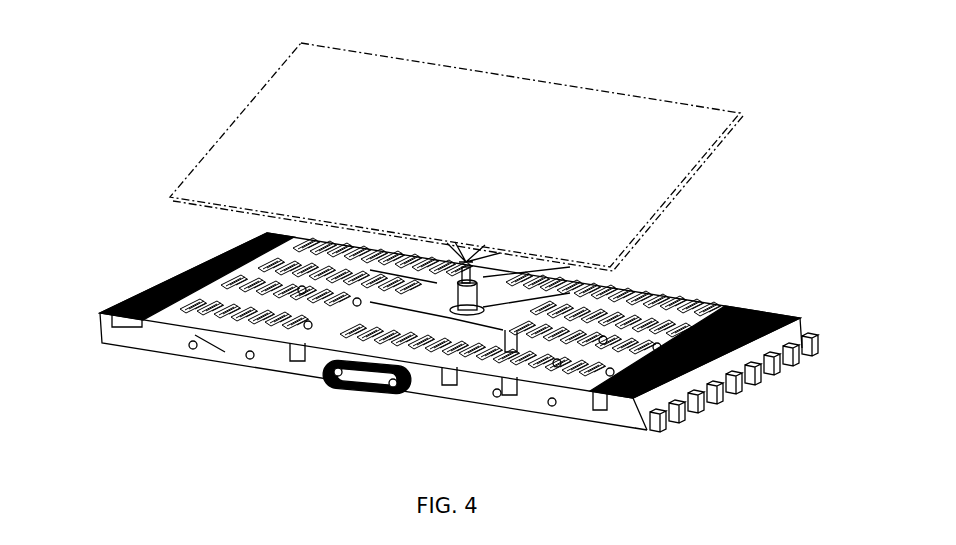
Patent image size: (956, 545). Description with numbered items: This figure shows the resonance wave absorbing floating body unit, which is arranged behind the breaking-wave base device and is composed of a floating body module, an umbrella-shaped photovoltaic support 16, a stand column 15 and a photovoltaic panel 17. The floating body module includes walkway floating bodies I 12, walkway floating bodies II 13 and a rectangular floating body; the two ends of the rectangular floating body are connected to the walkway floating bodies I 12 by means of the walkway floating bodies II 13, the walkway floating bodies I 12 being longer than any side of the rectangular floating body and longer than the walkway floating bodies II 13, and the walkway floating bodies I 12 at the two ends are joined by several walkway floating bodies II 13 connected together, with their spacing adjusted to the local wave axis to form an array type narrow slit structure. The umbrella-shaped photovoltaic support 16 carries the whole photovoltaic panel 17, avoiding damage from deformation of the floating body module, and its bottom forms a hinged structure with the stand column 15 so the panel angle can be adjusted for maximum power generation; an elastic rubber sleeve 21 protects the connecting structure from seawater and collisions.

The walkway floating body I 12 is at (224, 253).
The walkway floating body II 13 is at (133, 297).
The stand column 15 is at (690, 373).
The umbrella-shaped photovoltaic support 16 is at (480, 262).
The photovoltaic panel 17 is at (459, 155).
The elastic rubber sleeve 21 is at (322, 375).